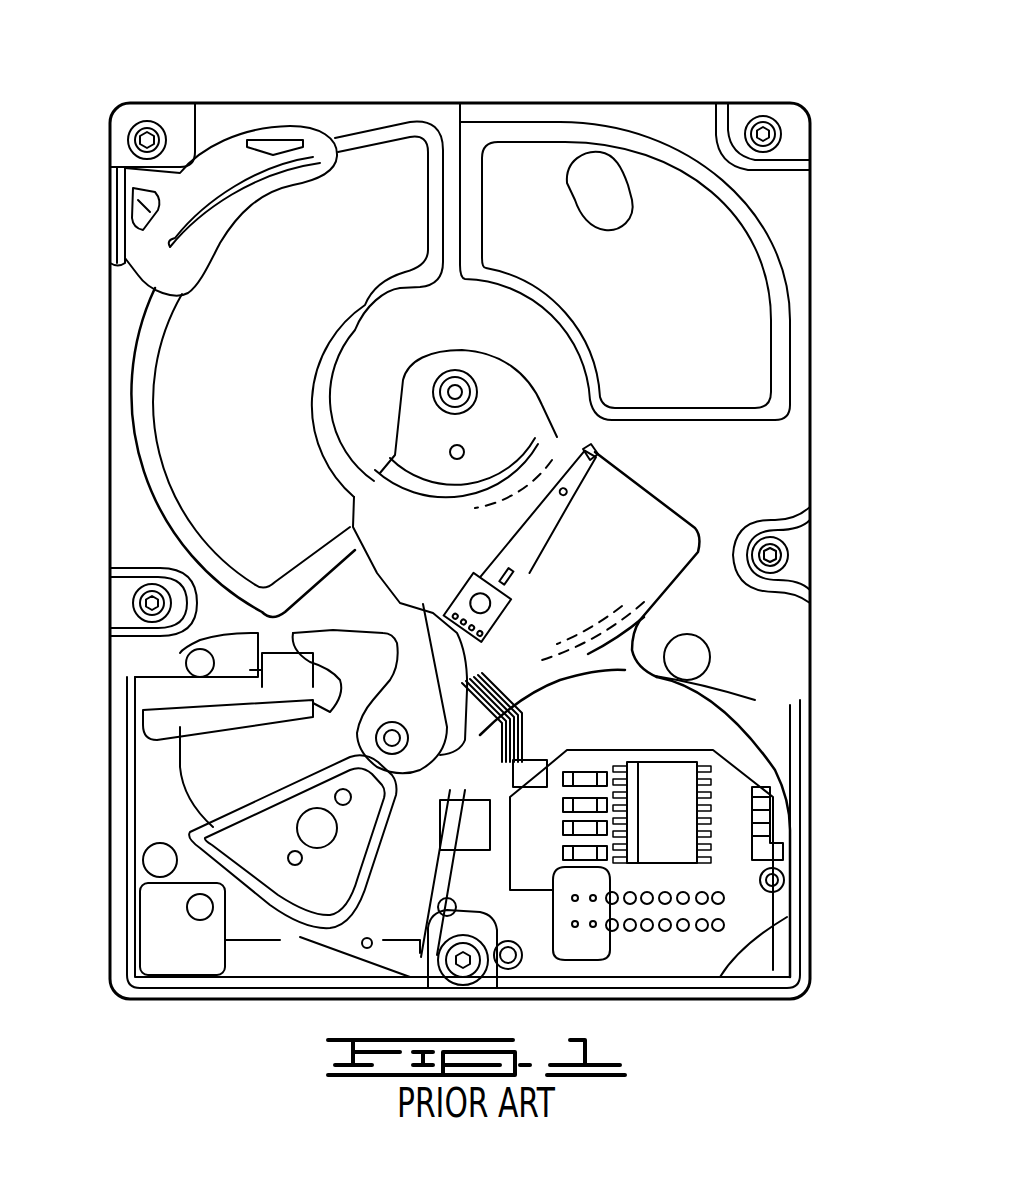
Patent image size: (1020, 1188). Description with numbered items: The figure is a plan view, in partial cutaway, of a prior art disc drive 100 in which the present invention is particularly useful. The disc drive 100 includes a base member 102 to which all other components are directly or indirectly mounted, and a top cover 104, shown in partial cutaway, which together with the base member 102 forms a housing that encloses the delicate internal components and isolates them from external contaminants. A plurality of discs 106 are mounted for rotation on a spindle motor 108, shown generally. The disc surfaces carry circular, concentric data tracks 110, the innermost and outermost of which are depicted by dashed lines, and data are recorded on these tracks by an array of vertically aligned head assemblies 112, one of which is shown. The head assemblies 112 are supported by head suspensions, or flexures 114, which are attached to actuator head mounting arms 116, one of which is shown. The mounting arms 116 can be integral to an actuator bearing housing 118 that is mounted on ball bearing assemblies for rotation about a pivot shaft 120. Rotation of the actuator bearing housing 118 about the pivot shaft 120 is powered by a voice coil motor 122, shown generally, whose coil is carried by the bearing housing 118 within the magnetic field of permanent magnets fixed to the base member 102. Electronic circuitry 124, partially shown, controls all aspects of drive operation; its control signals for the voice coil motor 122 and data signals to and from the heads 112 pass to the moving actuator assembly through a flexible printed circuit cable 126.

The disc drive 100 is at (150, 83).
The base member 102 is at (108, 922).
The top cover 104 is at (455, 115).
The discs 106 is at (645, 585).
The spindle motor 108 is at (497, 395).
The data tracks 110 is at (497, 503).
The head assemblies 112 is at (597, 453).
The head suspensions (flexures) 114 is at (523, 555).
The actuator head mounting arms 116 is at (463, 657).
The actuator bearing housing 118 is at (353, 667).
The pivot shaft 120 is at (397, 733).
The voice coil motor (VCM) 122 is at (283, 925).
The electronic circuitry 124 is at (723, 781).
The flexible printed circuit cable (PCC) 126 is at (722, 700).